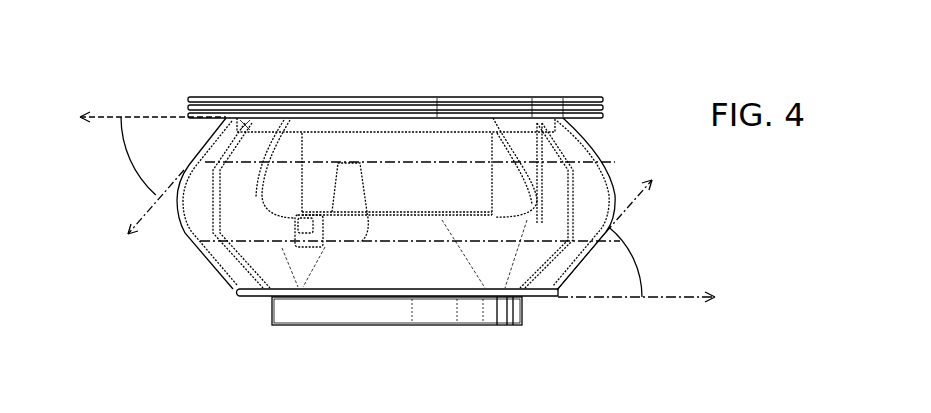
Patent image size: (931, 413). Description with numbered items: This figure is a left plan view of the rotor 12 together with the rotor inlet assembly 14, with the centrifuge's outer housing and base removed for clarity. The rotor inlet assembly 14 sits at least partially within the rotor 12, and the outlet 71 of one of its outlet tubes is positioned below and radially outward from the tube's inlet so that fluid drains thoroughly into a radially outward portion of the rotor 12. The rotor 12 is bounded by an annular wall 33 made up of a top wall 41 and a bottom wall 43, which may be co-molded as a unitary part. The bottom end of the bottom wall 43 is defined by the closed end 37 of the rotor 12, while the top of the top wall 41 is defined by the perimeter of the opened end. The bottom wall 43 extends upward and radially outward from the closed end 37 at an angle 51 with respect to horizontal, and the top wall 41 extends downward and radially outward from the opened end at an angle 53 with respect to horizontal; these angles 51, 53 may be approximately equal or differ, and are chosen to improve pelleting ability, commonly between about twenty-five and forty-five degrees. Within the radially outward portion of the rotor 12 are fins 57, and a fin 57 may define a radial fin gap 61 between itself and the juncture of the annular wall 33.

The rotor 12 is at (159, 275).
The rotor inlet assembly 14 is at (447, 129).
The annular wall 33 is at (619, 164).
The closed end 37 is at (253, 297).
The top wall 41 is at (208, 135).
The bottom wall 43 is at (583, 257).
The angle 51 is at (630, 260).
The angle 53 is at (127, 163).
The fin 57 is at (232, 173).
The radial fin gap 61 is at (387, 275).
The outlet 71 is at (308, 228).